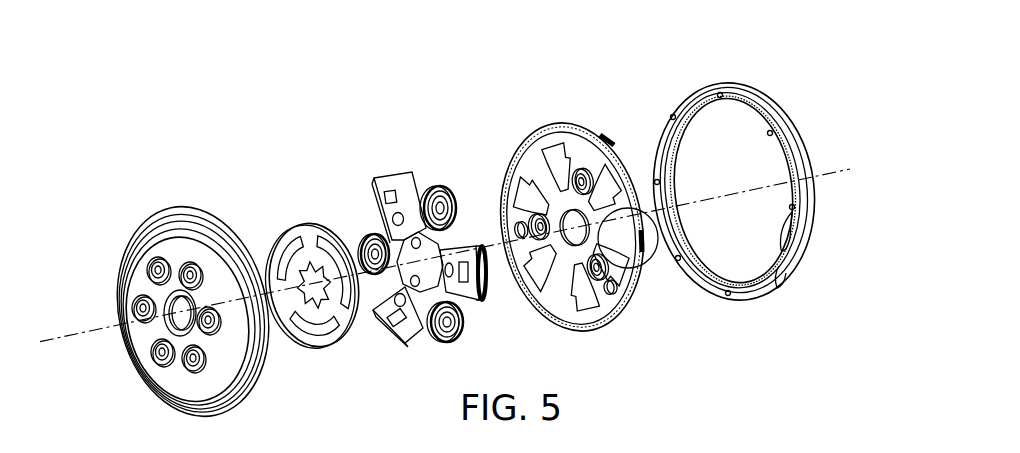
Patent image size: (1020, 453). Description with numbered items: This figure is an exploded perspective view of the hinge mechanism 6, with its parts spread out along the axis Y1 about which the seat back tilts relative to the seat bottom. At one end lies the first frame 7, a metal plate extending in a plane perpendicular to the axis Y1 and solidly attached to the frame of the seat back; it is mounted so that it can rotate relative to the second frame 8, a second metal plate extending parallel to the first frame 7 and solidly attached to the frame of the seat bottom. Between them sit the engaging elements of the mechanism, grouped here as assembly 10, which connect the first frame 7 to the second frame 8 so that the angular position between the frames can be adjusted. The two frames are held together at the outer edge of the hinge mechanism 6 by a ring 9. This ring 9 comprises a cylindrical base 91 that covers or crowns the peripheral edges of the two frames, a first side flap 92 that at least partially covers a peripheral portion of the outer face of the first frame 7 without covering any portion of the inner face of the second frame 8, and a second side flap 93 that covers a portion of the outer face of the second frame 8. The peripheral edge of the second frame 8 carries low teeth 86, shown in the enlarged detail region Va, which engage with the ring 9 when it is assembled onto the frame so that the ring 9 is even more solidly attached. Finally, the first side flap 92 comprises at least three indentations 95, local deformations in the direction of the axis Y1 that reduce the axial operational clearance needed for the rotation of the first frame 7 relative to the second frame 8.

The hinge mechanism 6 is at (350, 116).
The first frame 7 is at (155, 265).
The second frame 8 is at (541, 154).
The ring 9 is at (748, 179).
The clutch mechanism assembly 10 is at (507, 335).
The teeth 86 is at (607, 136).
The cylindrical base 91 is at (798, 137).
The first side flap 92 is at (684, 103).
The second side flap 93 is at (679, 186).
The indentations 95 is at (720, 93).
The axis Y1 is at (84, 333).
The detail region Va is at (650, 290).